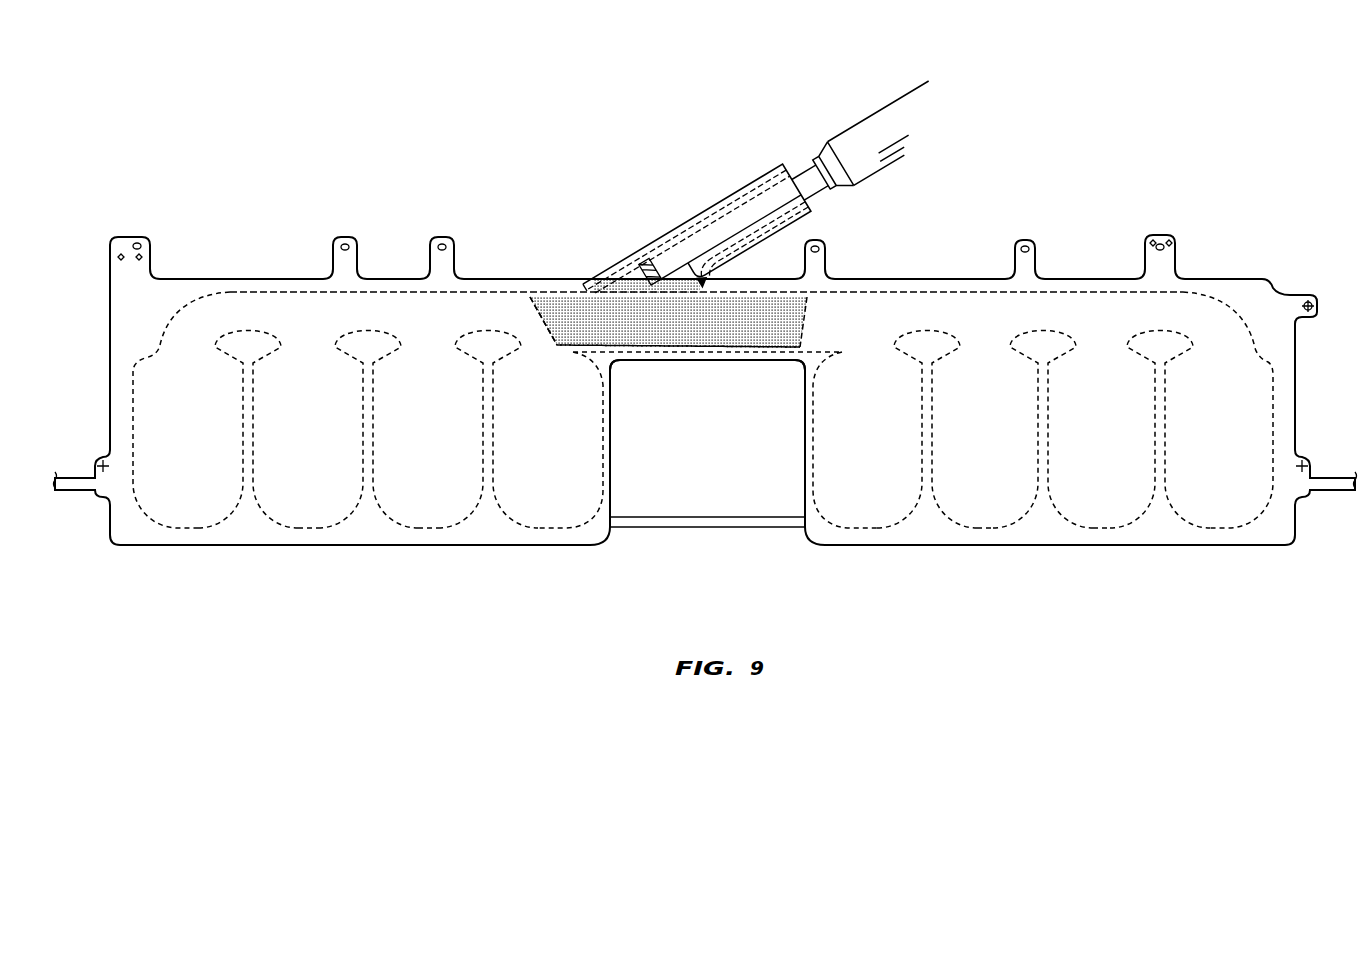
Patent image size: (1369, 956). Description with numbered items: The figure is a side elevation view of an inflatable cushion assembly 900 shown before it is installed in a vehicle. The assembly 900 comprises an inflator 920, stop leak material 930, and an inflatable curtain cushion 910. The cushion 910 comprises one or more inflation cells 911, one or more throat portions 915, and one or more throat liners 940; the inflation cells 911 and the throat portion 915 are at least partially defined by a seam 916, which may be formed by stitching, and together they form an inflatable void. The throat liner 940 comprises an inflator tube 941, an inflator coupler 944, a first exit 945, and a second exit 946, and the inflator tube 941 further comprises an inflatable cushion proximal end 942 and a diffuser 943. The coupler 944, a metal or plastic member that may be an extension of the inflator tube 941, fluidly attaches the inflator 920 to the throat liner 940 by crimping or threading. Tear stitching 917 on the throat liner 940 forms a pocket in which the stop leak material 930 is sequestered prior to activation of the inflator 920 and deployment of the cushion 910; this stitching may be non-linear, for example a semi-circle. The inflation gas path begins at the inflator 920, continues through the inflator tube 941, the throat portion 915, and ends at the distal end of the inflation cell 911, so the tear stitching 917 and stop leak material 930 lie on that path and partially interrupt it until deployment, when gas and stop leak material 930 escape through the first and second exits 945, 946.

The inflatable cushion assembly 900 is at (808, 100).
The inflatable curtain cushion 910 is at (503, 279).
The inflation cell 911 is at (435, 490).
The throat portion 915 is at (650, 357).
The seam 916 is at (410, 528).
The tear stitching 917 is at (557, 322).
The inflator 920 is at (877, 152).
The stop leak material 930 is at (597, 300).
The throat liner 940 is at (728, 205).
The inflator tube 941 is at (700, 205).
The inflatable cushion proximal end 942 is at (660, 260).
The diffuser 943 is at (770, 252).
The inflator coupler 944 is at (815, 163).
The first exit 945 is at (548, 327).
The second exit 946 is at (797, 318).